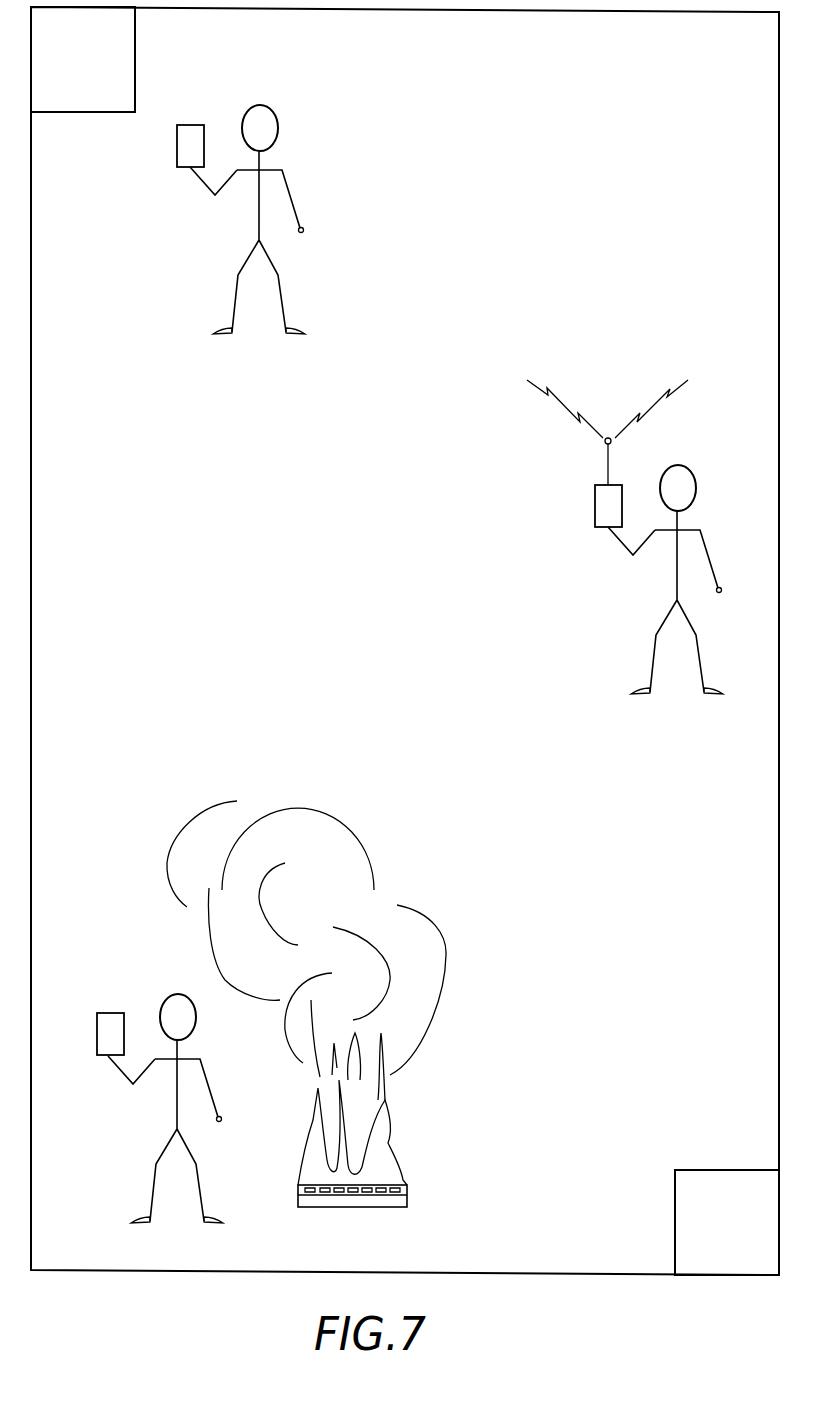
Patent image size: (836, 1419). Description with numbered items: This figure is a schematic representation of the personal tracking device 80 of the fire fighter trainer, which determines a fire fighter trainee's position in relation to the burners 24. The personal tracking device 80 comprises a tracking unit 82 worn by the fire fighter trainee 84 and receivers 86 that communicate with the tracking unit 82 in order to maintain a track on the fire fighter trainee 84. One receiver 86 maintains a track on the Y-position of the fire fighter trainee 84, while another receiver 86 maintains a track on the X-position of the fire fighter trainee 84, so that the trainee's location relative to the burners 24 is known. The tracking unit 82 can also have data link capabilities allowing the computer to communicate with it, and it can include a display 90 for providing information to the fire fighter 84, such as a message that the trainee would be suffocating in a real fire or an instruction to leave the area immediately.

The burners 24 is at (409, 1197).
The personal tracking device 80 is at (279, 112).
The tracking unit 82 is at (171, 172).
The fire fighter trainee 84 is at (246, 240).
The receivers 86 is at (138, 70).
The display 90 is at (589, 479).